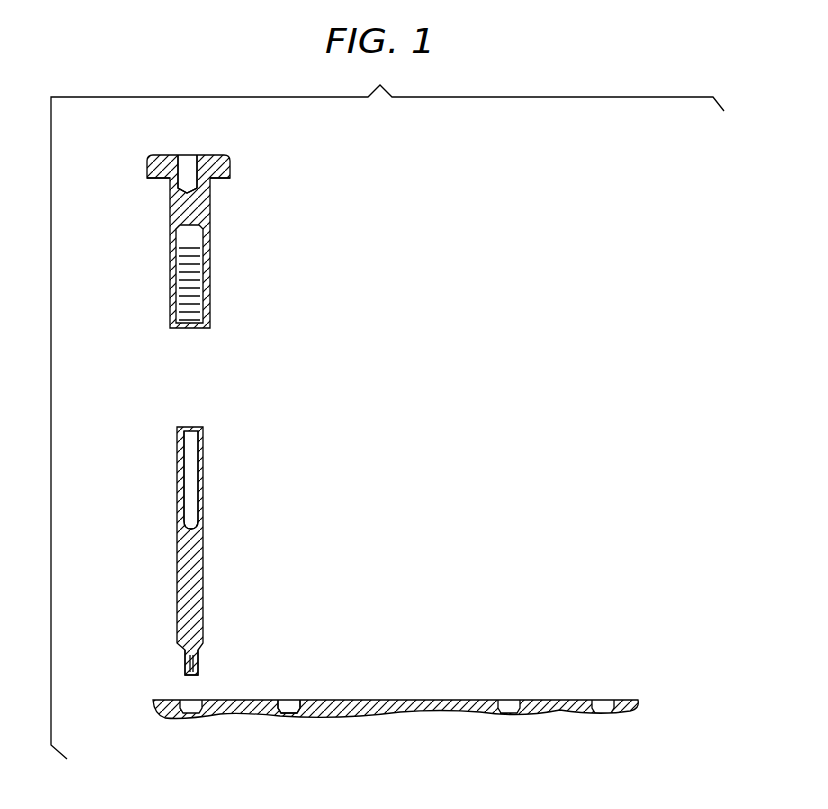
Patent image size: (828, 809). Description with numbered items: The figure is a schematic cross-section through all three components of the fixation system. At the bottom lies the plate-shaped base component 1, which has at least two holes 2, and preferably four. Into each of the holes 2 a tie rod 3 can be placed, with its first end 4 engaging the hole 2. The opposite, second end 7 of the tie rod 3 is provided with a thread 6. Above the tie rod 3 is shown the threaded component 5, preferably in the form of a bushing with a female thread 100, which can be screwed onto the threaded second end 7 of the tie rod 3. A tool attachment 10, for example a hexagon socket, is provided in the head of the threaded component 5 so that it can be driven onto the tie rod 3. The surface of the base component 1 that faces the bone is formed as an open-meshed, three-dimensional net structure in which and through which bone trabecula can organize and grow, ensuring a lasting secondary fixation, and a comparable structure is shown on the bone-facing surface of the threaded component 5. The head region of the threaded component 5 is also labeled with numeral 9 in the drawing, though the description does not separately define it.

The base component 1 is at (395, 685).
The holes 2 is at (288, 700).
The tie rod 3 is at (196, 529).
The first end 4 is at (187, 668).
The threaded component 5 is at (195, 222).
The thread 6 is at (205, 488).
The second end 7 is at (194, 430).
The screw head 9 is at (222, 182).
The tool attachment 10 is at (198, 160).
The female thread 100 is at (231, 239).